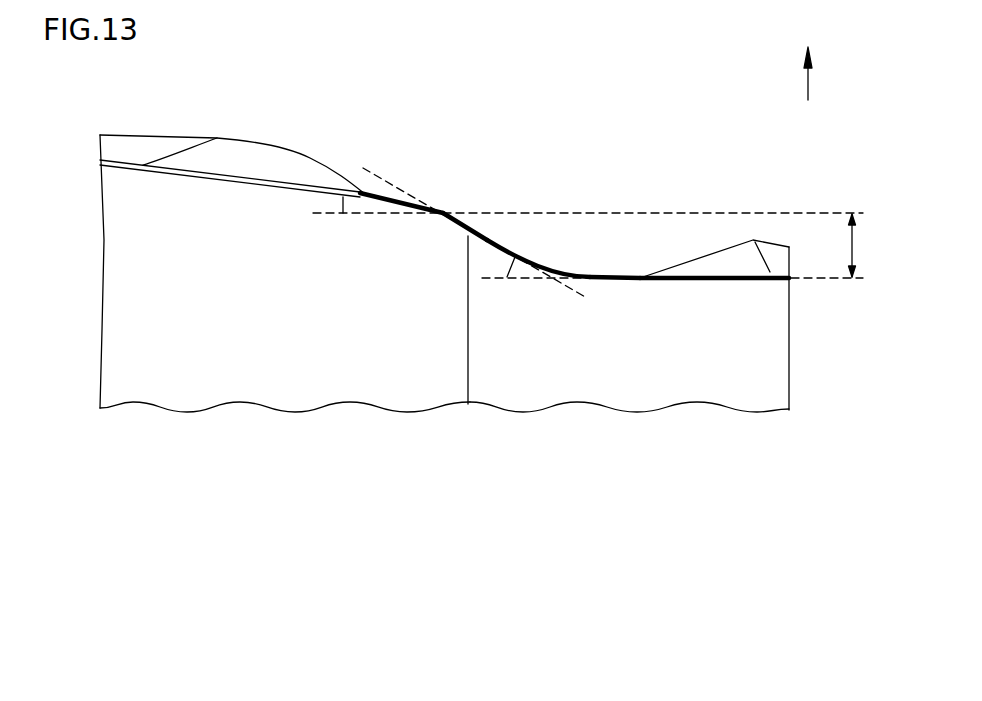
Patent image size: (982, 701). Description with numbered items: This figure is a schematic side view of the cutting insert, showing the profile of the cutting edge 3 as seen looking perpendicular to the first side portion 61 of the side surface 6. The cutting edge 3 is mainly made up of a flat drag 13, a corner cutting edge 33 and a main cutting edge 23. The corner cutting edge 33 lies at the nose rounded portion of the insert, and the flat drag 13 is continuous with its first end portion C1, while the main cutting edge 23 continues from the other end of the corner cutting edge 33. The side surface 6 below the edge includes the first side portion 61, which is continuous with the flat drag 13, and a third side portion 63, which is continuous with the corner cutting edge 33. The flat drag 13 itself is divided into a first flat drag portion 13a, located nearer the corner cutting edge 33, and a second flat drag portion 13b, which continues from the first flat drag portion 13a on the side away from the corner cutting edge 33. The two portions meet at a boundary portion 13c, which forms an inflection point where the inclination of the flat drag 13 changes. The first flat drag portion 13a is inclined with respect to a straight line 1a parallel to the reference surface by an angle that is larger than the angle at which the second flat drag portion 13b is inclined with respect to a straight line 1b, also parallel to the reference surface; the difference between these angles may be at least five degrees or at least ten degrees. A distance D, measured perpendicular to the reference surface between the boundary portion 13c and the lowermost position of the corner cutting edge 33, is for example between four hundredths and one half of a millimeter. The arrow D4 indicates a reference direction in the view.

The cutting edge 3 is at (762, 89).
The flat drag 13 is at (355, 123).
The first flat drag portion 13a is at (467, 226).
The second flat drag portion 13b is at (362, 192).
The boundary portion 13c is at (447, 208).
The first end portion C1 is at (473, 232).
The corner cutting edge 33 is at (642, 276).
The main cutting edge 23 is at (791, 268).
The side surface 6 is at (547, 450).
The first side portion 61 is at (408, 345).
The third side portion 63 is at (537, 343).
The straight line 1a is at (818, 279).
The straight line 1b is at (818, 213).
The distance D is at (860, 245).
The fourth direction D4 is at (816, 84).